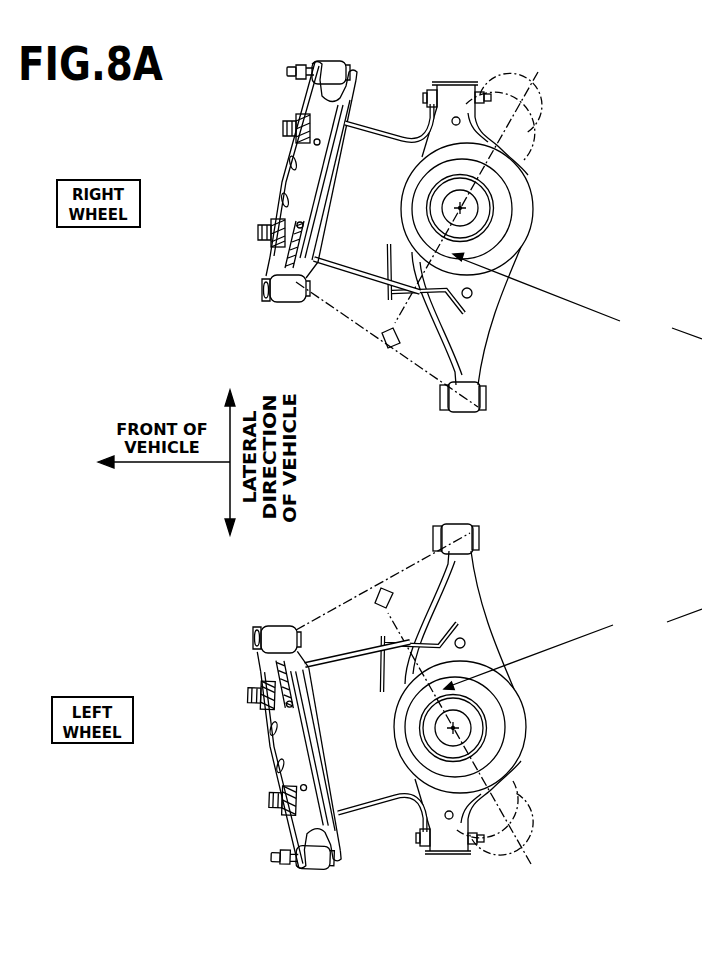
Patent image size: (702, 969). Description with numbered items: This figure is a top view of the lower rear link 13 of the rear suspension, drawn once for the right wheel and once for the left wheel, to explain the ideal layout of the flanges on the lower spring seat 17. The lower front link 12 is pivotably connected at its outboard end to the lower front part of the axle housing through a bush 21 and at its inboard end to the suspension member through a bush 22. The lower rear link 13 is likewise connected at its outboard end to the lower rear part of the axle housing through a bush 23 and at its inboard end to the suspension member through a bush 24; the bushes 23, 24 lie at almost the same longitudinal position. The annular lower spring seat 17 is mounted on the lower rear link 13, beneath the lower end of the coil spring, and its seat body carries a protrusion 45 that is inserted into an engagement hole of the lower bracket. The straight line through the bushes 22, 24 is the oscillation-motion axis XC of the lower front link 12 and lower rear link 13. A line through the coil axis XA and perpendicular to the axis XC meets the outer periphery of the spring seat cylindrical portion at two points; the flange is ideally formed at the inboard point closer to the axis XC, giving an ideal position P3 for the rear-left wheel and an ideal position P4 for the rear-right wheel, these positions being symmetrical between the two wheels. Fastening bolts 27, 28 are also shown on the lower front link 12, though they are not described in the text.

The lower front link 12 is at (290, 184).
The lower rear link 13 is at (380, 146).
The lower spring seat 17 is at (497, 238).
The bush 21 is at (332, 73).
The bush 22 is at (282, 301).
The bush 23 is at (454, 90).
The bush 24 is at (484, 395).
The upper bolt 27 is at (283, 128).
The lower bolt 28 is at (260, 232).
The protrusion 45 is at (691, 509).
The coil axis XA is at (466, 215).
The oscillation-motion axis XC is at (350, 320).
The ideal position for the flange of the rear-left road wheel P3 is at (573, 648).
The ideal position for the flange of the rear-right road wheel P4 is at (577, 296).